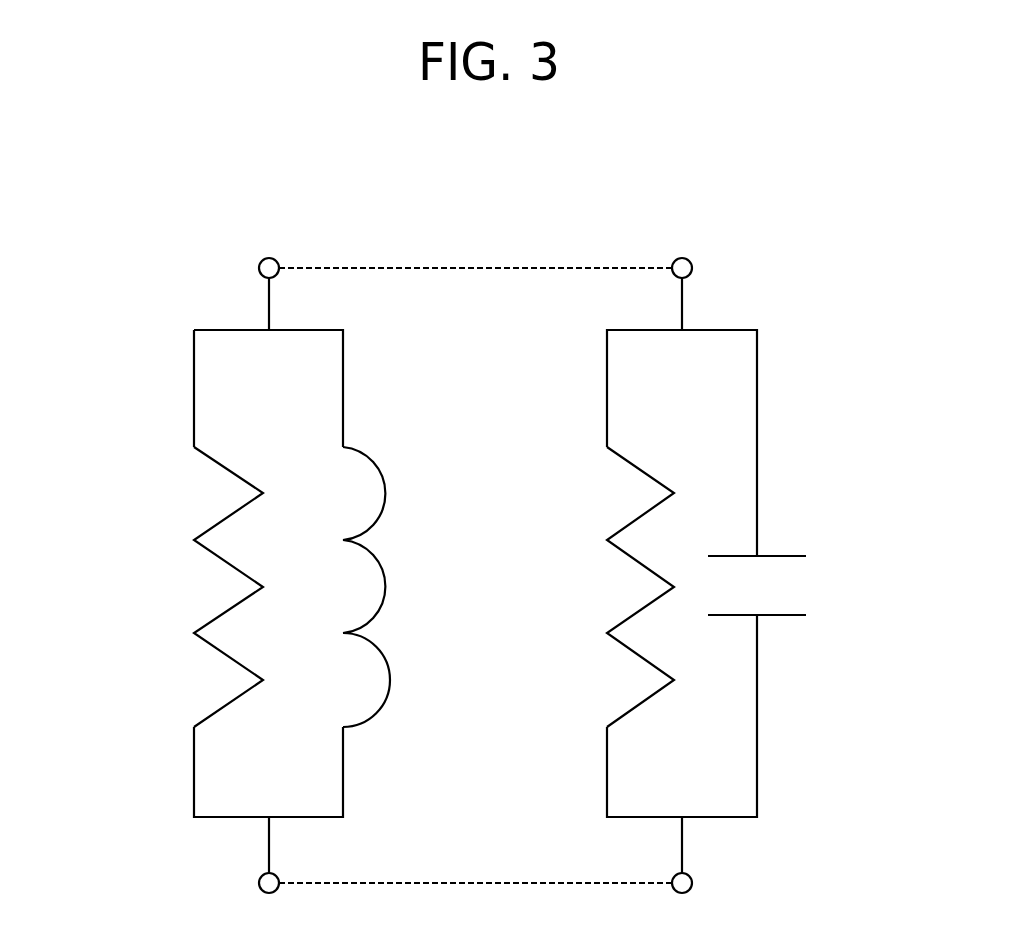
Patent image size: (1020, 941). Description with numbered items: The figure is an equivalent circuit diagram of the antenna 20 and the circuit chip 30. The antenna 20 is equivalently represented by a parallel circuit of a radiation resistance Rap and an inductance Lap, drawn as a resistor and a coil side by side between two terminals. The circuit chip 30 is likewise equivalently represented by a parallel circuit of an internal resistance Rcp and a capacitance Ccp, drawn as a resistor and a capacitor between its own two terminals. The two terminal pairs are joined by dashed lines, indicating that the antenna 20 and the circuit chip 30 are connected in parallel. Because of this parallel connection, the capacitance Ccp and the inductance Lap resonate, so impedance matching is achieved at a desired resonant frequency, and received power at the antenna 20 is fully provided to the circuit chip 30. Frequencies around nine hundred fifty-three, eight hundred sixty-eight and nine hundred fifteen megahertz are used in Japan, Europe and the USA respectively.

The antenna 20 is at (265, 545).
The circuit chip 30 is at (711, 555).
The radiation resistance Rap is at (180, 587).
The inductance Lap is at (405, 581).
The internal resistance Rcp is at (593, 587).
The capacitance Ccp is at (801, 600).